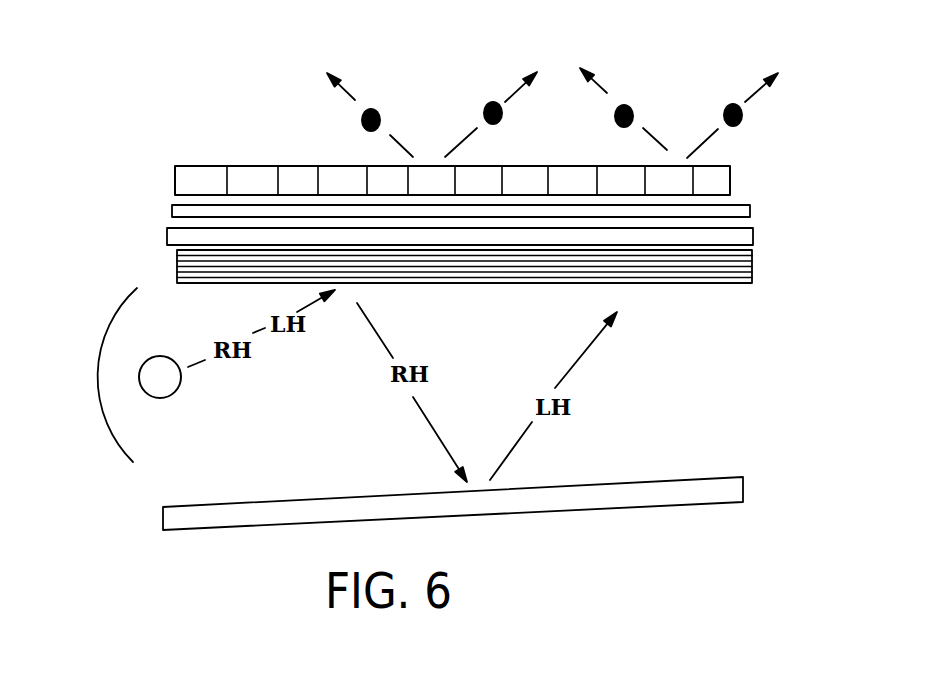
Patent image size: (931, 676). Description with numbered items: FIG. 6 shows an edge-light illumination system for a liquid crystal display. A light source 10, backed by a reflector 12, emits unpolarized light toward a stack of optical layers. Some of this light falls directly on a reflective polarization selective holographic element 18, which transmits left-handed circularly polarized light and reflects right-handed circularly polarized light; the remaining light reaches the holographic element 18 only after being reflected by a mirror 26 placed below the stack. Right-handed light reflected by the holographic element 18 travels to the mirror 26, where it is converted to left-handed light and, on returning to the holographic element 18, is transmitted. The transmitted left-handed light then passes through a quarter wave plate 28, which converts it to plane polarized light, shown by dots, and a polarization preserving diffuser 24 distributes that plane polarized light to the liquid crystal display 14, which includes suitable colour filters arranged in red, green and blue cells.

The light source 10 is at (155, 383).
The reflector 12 is at (103, 335).
The liquid crystal display 14 is at (516, 197).
The reflective polarization selective holographic element 18 is at (410, 174).
The polarization preserving diffuser 24 is at (506, 135).
The mirror 26 is at (465, 537).
The quarter wave plate 28 is at (484, 339).